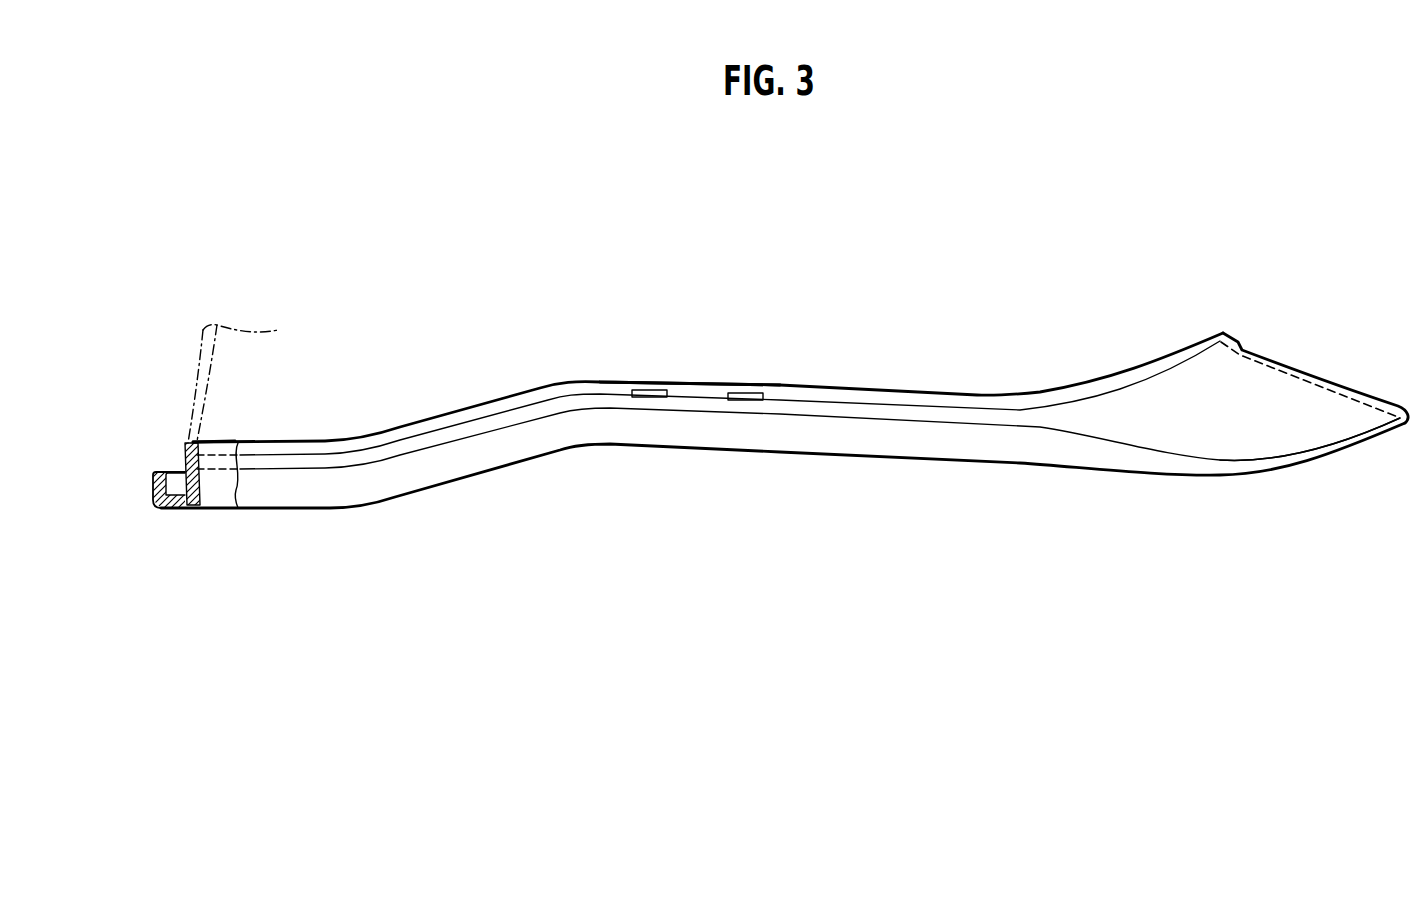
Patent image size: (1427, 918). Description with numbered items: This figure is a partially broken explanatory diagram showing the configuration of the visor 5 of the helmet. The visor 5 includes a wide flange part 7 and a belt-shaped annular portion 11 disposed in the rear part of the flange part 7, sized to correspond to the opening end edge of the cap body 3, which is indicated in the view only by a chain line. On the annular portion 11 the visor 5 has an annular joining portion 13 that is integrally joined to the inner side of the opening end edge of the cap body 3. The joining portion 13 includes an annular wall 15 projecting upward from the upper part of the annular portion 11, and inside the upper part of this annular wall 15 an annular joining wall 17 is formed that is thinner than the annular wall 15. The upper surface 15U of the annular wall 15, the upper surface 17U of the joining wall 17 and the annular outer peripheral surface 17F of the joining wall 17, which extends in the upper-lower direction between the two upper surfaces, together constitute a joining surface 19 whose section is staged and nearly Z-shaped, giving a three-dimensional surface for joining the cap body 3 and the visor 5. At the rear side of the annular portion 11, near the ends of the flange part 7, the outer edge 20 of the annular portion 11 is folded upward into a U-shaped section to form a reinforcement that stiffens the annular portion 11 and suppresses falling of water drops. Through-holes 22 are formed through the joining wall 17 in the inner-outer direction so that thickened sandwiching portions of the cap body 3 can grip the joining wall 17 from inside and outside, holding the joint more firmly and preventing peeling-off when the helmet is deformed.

The cap body 3 is at (196, 348).
The visor 5 is at (1313, 371).
The flange part 7 is at (1325, 430).
The annular portion 11 is at (203, 492).
The joining portion 13 is at (780, 386).
The annular wall 15 is at (312, 462).
The upper surface of annular wall 15U is at (186, 443).
The joining wall 17 is at (817, 393).
The outer peripheral surface of joining wall 17F is at (190, 447).
The upper surface of joining wall 17U is at (190, 440).
The joining surface 19 is at (225, 441).
The outer edge of annular portion 20 is at (155, 477).
The through-hole 22 is at (741, 391).